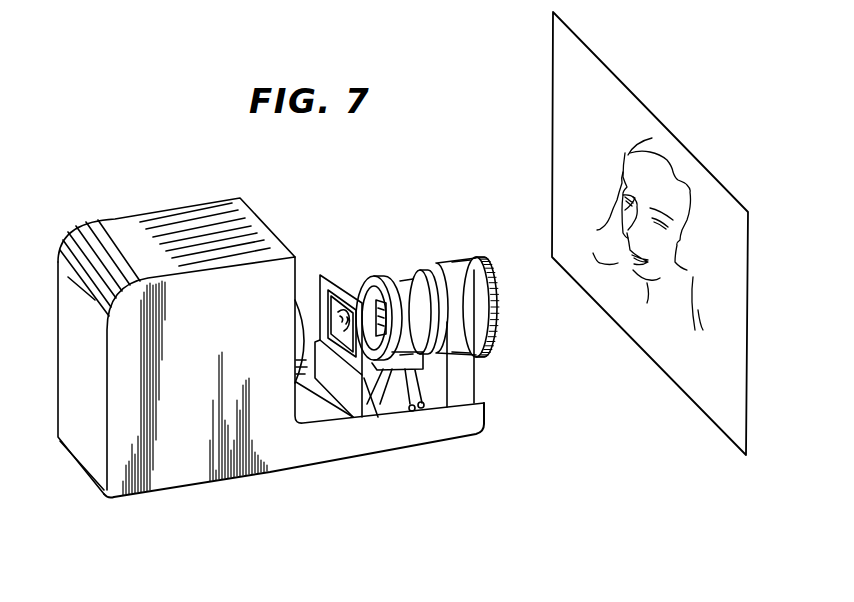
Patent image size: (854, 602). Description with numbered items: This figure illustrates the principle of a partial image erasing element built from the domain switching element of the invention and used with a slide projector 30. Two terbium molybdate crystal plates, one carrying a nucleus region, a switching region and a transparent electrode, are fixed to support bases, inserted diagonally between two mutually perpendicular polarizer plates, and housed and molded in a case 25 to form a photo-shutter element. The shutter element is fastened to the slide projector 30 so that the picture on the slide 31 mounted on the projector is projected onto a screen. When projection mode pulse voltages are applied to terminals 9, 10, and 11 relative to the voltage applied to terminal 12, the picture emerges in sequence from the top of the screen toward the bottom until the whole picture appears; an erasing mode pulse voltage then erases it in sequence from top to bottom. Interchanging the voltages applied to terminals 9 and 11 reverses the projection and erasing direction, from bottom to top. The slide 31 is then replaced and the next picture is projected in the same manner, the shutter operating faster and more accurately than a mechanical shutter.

The slide projector 30 is at (122, 248).
The slide 31 is at (325, 273).
The case 25 is at (387, 277).
The terminal 11 is at (360, 420).
The terminal 12 is at (385, 413).
The terminal 9 is at (412, 412).
The terminal 10 is at (421, 409).